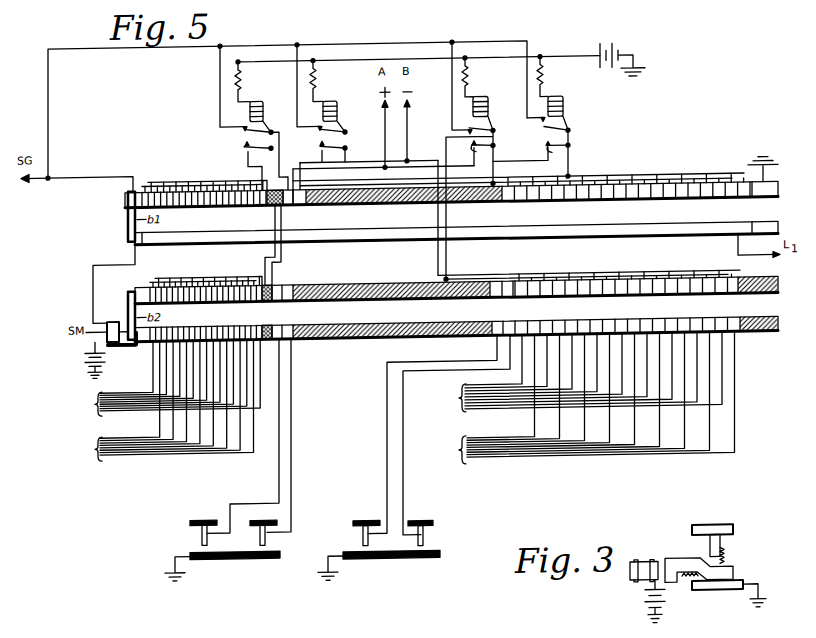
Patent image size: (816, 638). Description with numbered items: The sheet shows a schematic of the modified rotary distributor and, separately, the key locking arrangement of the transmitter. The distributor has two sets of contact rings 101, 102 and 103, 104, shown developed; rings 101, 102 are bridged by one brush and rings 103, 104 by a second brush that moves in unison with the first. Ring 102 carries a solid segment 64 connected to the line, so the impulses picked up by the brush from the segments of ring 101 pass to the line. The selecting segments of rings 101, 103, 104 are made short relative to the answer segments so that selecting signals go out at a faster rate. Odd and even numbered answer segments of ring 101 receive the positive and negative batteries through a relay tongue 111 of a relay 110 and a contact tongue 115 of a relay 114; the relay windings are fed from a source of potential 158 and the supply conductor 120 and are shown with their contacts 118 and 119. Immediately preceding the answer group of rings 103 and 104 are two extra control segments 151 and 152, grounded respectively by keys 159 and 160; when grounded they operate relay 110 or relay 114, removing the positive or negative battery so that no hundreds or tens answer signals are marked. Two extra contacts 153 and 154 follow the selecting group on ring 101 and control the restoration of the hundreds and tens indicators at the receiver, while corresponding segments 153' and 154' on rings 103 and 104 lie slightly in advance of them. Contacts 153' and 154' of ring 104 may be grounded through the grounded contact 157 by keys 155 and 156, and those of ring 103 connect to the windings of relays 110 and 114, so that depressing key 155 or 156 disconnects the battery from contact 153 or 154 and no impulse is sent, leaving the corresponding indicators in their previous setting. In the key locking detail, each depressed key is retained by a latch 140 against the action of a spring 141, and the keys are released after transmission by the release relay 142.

In FIG. 5, the supply conductor 120 is at (372, 50).
In FIG. 5, the source of potential 158 is at (618, 55).
In FIG. 5, the relay 110 is at (489, 118).
In FIG. 5, the relay 114 is at (565, 119).
In FIG. 5, the relay contact 118 is at (466, 137).
In FIG. 5, the relay contact 119 is at (569, 136).
In FIG. 5, the relay tongue 111 is at (478, 157).
In FIG. 5, the contact tongue 115 is at (569, 160).
In FIG. 5, the contact ring 101 is at (128, 200).
In FIG. 5, the contact ring 102 is at (128, 238).
In FIG. 5, the contact ring 103 is at (128, 299).
In FIG. 5, the contact ring 104 is at (128, 326).
In FIG. 5, the contact 153 is at (257, 209).
In FIG. 5, the contact 154 is at (311, 209).
In FIG. 5, the contact segment 153' is at (256, 303).
In FIG. 5, the contact segment 154' is at (294, 302).
In FIG. 5, the solid segment 64 is at (447, 234).
In FIG. 5, the control segment 151 is at (492, 330).
In FIG. 5, the control segment 152 is at (512, 318).
In FIG. 5, the key 155 is at (200, 524).
In FIG. 5, the key 156 is at (263, 525).
In FIG. 5, the grounded contact 157 is at (245, 564).
In FIG. 5, the key 159 is at (362, 517).
In FIG. 5, the key 160 is at (422, 528).
In FIG. 3, the release relay 142 is at (637, 572).
In FIG. 3, the latch 140 is at (672, 570).
In FIG. 3, the spring 141 is at (731, 567).